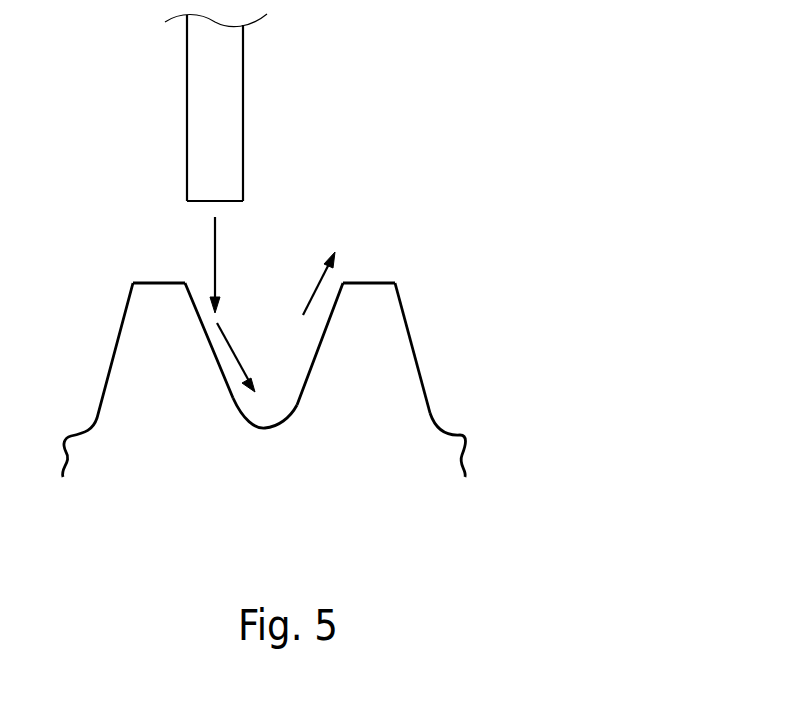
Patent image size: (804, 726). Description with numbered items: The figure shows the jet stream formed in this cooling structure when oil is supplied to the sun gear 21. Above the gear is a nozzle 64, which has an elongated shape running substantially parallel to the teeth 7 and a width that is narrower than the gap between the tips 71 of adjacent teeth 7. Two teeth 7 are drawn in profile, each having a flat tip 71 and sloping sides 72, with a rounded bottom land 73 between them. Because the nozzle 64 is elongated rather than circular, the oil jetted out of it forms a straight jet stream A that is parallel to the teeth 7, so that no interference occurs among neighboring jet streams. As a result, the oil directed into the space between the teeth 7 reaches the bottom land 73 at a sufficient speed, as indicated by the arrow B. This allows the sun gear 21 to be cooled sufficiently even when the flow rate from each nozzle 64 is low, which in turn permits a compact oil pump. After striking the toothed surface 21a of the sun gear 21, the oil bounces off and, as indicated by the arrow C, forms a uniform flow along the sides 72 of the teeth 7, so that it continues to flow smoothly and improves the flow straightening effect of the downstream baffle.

The nozzle 64 is at (225, 95).
The teeth 7 is at (311, 369).
The tip 71 is at (158, 283).
The side 72 is at (215, 367).
The bottom land 73 is at (267, 429).
The sun gear 21 is at (477, 377).
The toothed surface 21a is at (415, 337).
The jet stream A is at (212, 251).
The arrow B is at (237, 350).
The arrow C is at (305, 330).